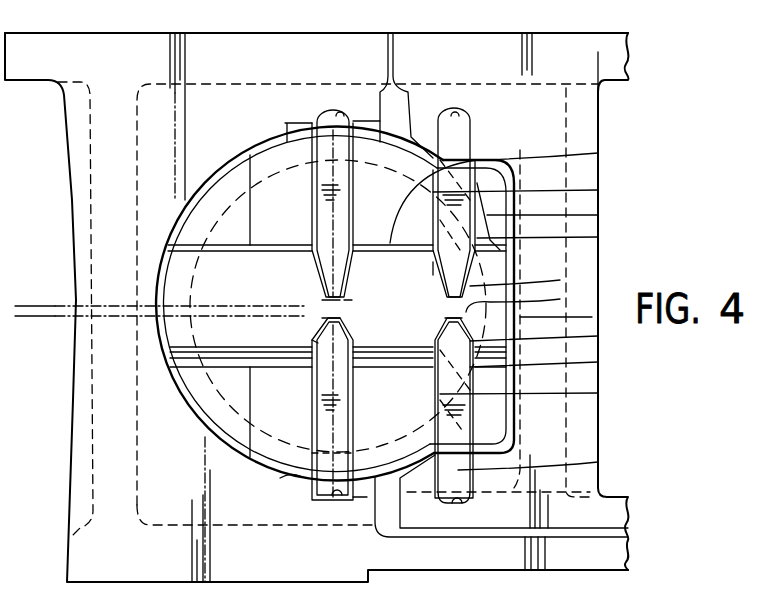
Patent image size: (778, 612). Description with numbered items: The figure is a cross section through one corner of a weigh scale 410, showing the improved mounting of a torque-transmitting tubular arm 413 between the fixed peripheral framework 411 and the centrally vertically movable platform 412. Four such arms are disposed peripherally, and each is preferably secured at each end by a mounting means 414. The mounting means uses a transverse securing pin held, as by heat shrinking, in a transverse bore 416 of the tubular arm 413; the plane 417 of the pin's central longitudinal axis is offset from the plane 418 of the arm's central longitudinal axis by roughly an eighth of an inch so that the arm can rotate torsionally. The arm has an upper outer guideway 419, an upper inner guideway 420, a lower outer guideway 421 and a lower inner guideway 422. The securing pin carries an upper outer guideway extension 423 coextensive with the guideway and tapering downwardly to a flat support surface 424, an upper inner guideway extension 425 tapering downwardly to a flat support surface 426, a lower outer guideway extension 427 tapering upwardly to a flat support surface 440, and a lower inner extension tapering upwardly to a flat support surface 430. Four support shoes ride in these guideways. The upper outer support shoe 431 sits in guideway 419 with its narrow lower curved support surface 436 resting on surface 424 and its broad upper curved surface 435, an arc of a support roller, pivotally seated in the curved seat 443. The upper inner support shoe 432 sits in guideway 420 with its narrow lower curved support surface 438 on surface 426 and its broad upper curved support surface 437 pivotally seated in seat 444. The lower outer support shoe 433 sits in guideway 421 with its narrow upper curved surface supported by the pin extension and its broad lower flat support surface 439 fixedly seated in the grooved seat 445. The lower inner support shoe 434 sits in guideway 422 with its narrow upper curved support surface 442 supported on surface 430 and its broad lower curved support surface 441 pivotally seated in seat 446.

The weigh scale 410 is at (214, 30).
The fixed peripheral framework 411 is at (145, 48).
The centrally vertically movable platform 412 is at (598, 52).
The torque-transmitting tubular arm 413 is at (598, 153).
The mounting means 414 is at (598, 215).
The transverse bore 416 is at (598, 190).
The plane of the central longitudinal axis of the securing pin 417 is at (40, 302).
The plane of the central longitudinal axis of the torque-transmitting tubular arm 418 is at (40, 320).
The upper outer guideway 419 is at (317, 187).
The upper inner guideway 420 is at (598, 237).
The lower outer guideway 421 is at (315, 427).
The lower inner guideway 422 is at (598, 393).
The upper outer guideway extension 423 is at (323, 263).
The flat support surface 424 is at (348, 298).
The upper inner guideway extension 425 is at (433, 270).
The flat support surface 426 is at (560, 299).
The lower outer guideway extension 427 is at (312, 343).
The flat support surface 430 is at (598, 336).
The upper outer support shoe 431 is at (322, 127).
The upper inner support shoe 432 is at (468, 140).
The lower outer support shoe 433 is at (290, 482).
The lower inner support shoe 434 is at (598, 462).
The broad upper curved surface 435 is at (343, 112).
The narrow lower curved support surface 436 is at (330, 296).
The broad upper curved support surface 437 is at (460, 140).
The narrow lower curved support surface 438 is at (560, 280).
The broad lower flat support surface 439 is at (342, 500).
The flat support surface 440 is at (325, 317).
The broad lower curved support surface 441 is at (345, 321).
The narrow upper curved support surface 442 is at (598, 362).
The curved seat 443 is at (338, 117).
The seat 444 is at (440, 110).
The grooved seat 445 is at (320, 500).
The seat 446 is at (447, 505).